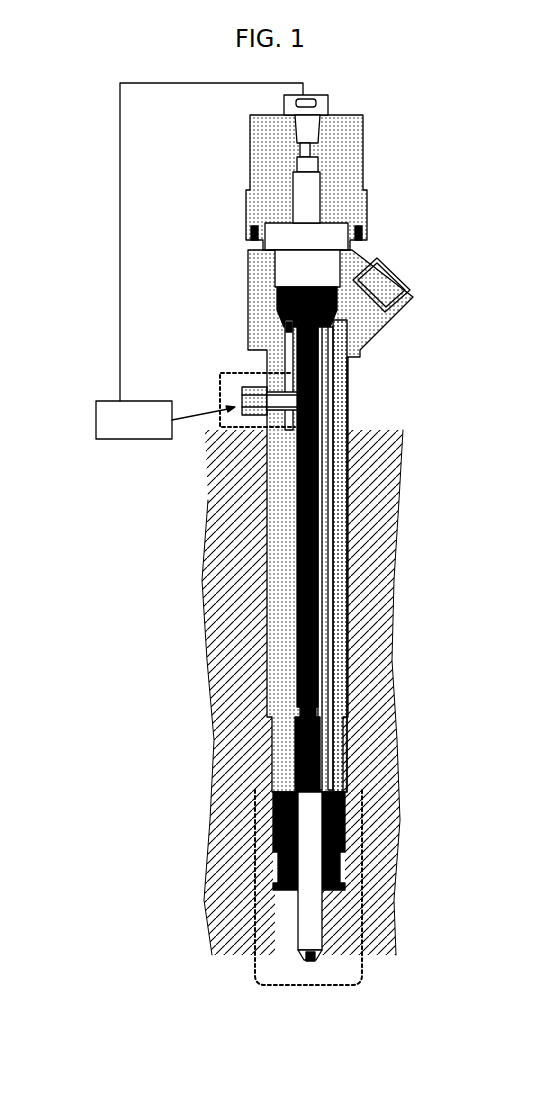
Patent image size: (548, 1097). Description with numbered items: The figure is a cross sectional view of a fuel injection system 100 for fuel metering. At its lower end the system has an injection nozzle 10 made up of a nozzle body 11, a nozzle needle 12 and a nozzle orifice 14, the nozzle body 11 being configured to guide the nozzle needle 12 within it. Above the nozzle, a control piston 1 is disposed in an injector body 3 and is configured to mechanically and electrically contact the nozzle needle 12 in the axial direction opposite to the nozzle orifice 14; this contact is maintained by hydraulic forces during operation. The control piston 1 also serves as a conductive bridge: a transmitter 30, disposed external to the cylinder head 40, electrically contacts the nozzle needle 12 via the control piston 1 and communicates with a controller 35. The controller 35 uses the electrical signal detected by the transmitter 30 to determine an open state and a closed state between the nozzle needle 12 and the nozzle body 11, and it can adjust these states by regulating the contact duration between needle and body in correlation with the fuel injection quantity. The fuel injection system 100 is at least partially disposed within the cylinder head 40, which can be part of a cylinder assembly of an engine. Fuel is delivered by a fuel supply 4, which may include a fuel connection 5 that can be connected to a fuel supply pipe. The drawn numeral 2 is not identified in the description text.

The fuel injection system 100 is at (308, 567).
The control piston 1 is at (327, 562).
The injector body 2 is at (317, 402).
The injector body 3 is at (267, 465).
The fuel supply 4 is at (330, 642).
The fuel connection 5 is at (400, 268).
The injection nozzle 10 is at (292, 914).
The nozzle body 11 is at (345, 838).
The nozzle needle 12 is at (308, 920).
The nozzle orifice 14 is at (309, 967).
The transmitter 30 is at (233, 402).
The controller 35 is at (113, 418).
The cylinder head 40 is at (390, 455).